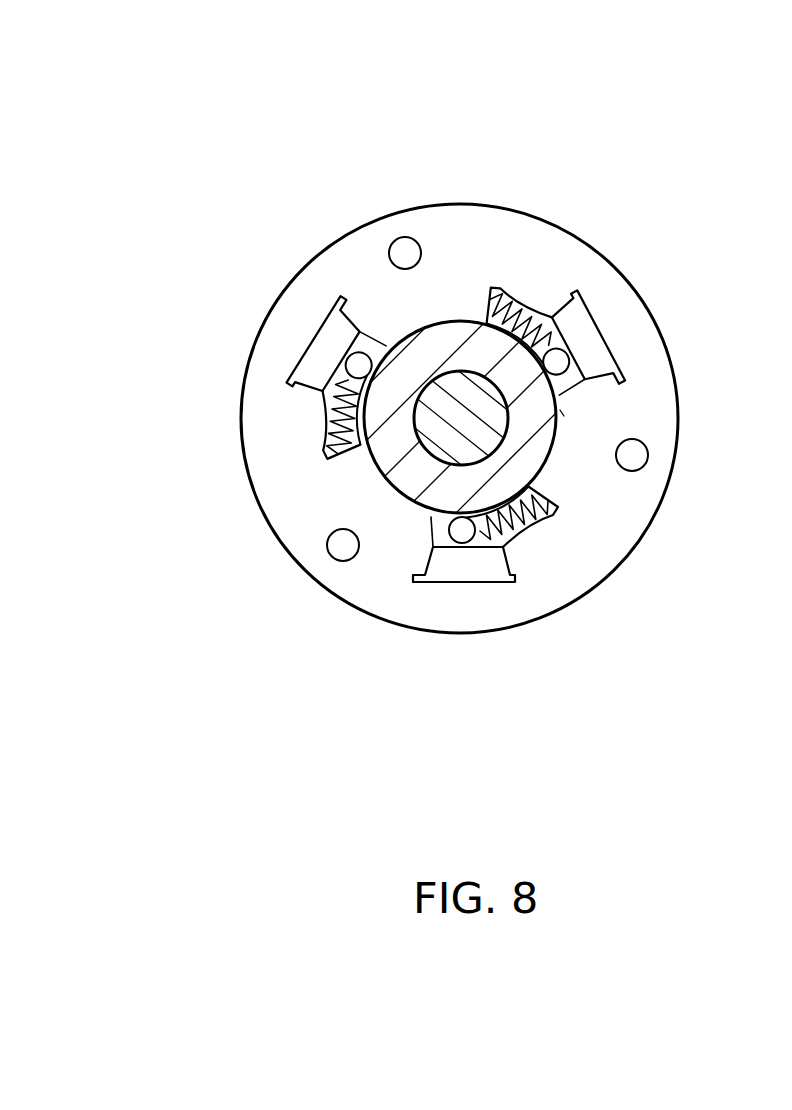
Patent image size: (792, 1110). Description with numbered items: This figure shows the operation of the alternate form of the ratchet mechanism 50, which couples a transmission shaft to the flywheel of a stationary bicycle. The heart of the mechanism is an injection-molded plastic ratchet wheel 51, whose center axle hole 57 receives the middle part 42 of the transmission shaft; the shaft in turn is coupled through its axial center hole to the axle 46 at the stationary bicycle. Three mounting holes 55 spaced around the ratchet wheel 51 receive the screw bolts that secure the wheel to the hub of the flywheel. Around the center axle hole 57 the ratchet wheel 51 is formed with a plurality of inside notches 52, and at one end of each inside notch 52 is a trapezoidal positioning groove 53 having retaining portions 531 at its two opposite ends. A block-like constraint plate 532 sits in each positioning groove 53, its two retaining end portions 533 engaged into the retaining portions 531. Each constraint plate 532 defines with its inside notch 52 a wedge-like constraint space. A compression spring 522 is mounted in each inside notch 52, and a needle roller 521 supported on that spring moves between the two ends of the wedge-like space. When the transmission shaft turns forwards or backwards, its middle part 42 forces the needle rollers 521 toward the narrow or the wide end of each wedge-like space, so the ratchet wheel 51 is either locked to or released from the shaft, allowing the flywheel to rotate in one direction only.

The ratchet mechanism 50 is at (519, 207).
The ratchet wheel 51 is at (596, 258).
The mounting holes 55 is at (648, 461).
The middle part 42 is at (457, 333).
The axle 46 is at (480, 442).
The center axle hole 57 is at (562, 413).
The positioning groove 53 is at (358, 303).
The inside notch 52 is at (323, 410).
The block-like constraint plate 532 is at (320, 345).
The retaining end portions 533 is at (514, 588).
The compression spring 522 is at (347, 420).
The needle roller 521 is at (440, 533).
The retaining portions 531 is at (410, 585).